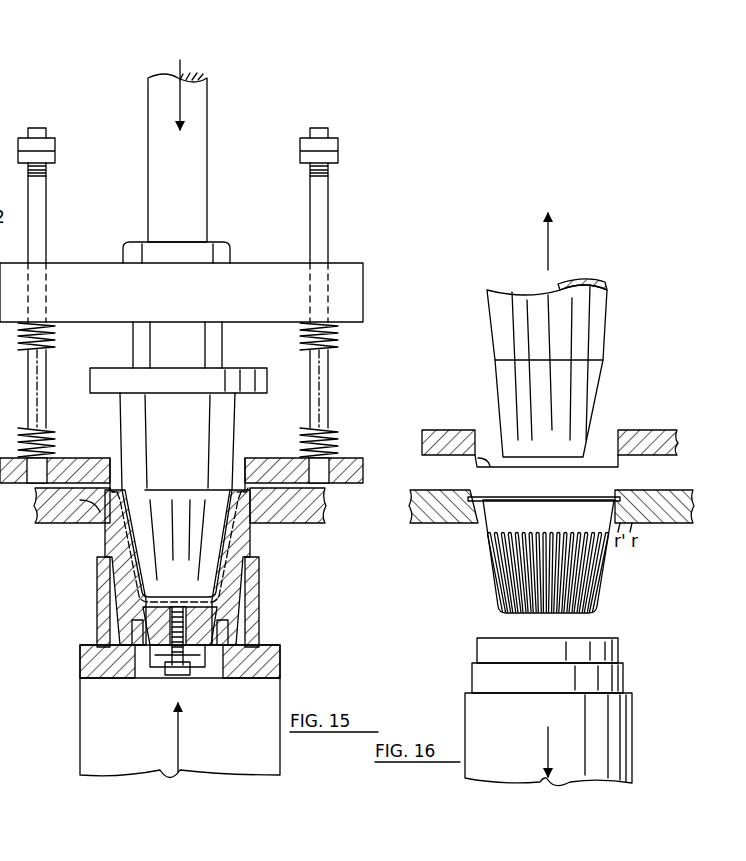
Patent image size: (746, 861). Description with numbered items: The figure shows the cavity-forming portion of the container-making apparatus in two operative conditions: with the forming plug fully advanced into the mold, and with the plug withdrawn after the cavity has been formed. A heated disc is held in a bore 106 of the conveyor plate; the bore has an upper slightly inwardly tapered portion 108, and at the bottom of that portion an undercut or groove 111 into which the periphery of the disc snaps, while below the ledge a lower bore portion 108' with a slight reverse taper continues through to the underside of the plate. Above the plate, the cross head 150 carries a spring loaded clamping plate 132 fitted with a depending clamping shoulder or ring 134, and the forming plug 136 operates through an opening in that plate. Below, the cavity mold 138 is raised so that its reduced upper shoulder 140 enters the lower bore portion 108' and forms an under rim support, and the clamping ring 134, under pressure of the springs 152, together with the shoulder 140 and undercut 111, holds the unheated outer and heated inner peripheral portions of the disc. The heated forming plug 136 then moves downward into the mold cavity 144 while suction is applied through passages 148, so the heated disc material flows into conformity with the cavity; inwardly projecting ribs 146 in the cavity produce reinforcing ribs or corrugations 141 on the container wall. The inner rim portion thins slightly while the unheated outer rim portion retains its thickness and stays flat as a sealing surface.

In FIG. 16, the bore 106 is at (585, 495).
In FIG. 16, the upper inwardly tapered bore portion 108 is at (449, 474).
In FIG. 16, the lower bore portion 108' is at (456, 546).
In FIG. 15, the undercut or groove 111 is at (98, 505).
In FIG. 16, the undercut or groove 111 is at (462, 520).
In FIG. 15, the spring loaded clamping plate 132 is at (355, 458).
In FIG. 16, the spring loaded clamping plate 132 is at (633, 433).
In FIG. 15, the clamping shoulder or ring 134 is at (256, 490).
In FIG. 16, the clamping shoulder or ring 134 is at (499, 476).
In FIG. 15, the forming plug 136 is at (186, 429).
In FIG. 16, the forming plug 136 is at (583, 343).
In FIG. 15, the cavity mold 138 is at (95, 615).
In FIG. 15, the reduced upper shoulder 140 is at (262, 522).
In FIG. 16, the reinforcing ribs or corrugations 141 is at (575, 583).
In FIG. 15, the mold cavity 144 is at (217, 605).
In FIG. 15, the inwardly projecting ribs 146 is at (248, 572).
In FIG. 15, the passages 148 is at (215, 615).
In FIG. 15, the cross head 150 is at (352, 290).
In FIG. 15, the springs 152 is at (338, 340).